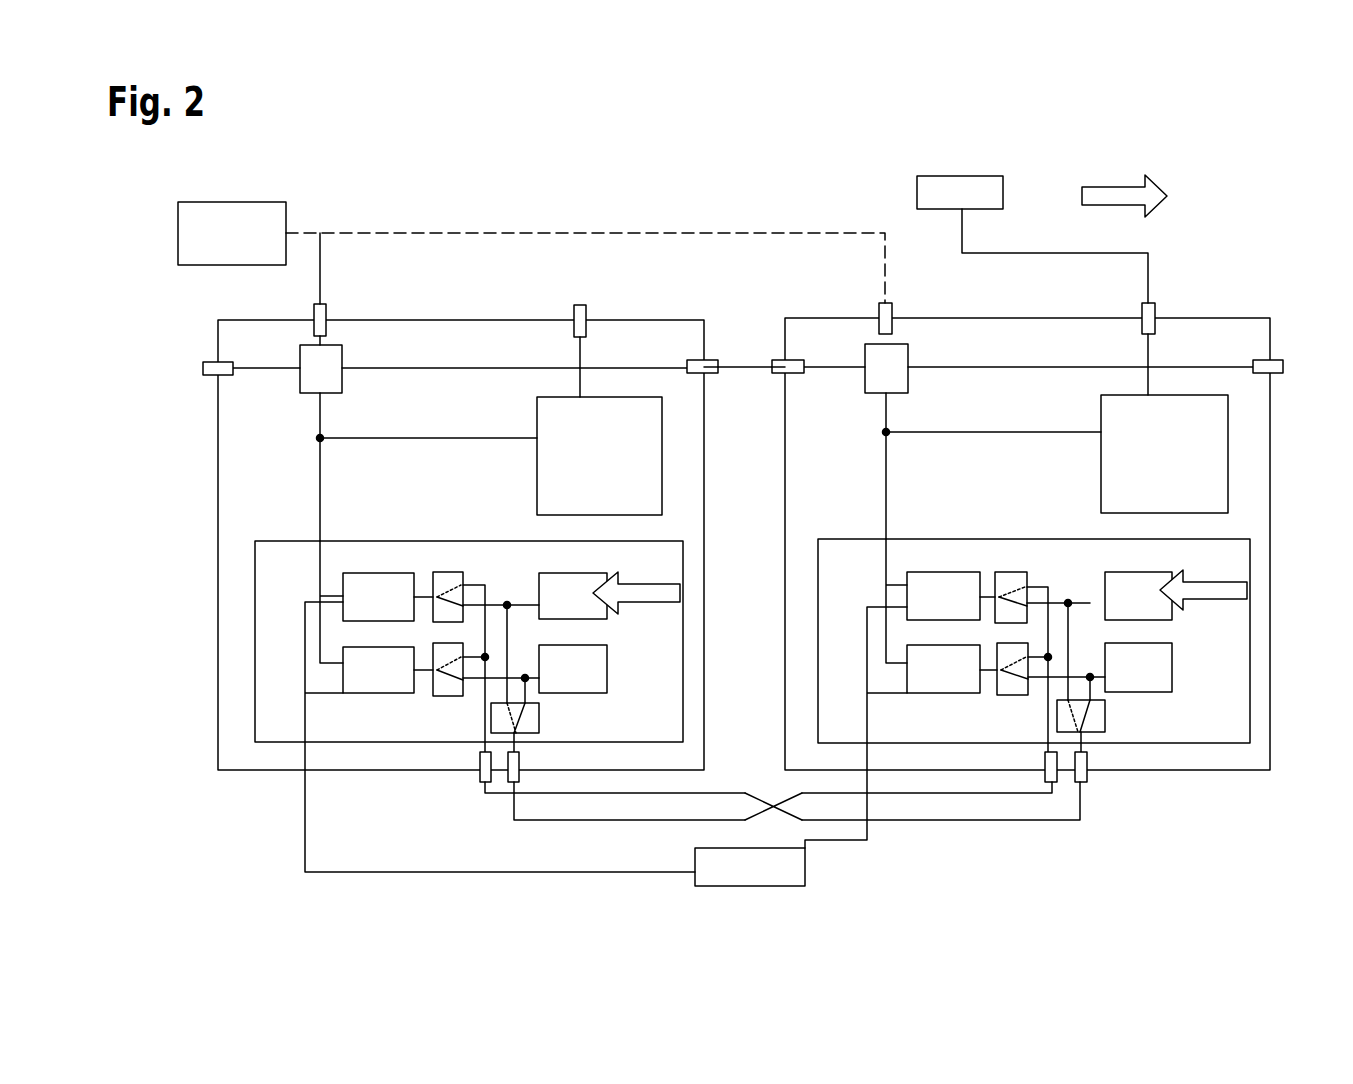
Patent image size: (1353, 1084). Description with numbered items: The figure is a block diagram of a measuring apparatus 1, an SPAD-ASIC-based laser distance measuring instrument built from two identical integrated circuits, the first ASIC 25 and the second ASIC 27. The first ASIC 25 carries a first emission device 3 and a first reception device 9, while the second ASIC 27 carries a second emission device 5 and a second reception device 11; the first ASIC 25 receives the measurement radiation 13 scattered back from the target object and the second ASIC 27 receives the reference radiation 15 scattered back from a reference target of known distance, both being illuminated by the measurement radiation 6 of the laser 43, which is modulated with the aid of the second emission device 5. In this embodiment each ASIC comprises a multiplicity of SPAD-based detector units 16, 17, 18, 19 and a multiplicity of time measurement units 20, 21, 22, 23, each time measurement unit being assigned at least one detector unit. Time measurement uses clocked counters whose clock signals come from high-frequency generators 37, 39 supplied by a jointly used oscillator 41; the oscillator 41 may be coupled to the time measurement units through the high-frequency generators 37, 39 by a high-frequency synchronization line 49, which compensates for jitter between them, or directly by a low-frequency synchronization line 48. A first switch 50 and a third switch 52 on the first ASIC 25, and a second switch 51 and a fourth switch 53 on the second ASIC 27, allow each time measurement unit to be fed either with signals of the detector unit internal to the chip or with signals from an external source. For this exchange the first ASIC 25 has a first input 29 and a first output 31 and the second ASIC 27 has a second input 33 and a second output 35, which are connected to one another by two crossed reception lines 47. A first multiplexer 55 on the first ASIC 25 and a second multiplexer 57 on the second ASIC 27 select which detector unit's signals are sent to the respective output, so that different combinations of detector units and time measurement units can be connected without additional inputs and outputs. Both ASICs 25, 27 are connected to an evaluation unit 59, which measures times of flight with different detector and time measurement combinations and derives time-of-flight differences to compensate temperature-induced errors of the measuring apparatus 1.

The measuring apparatus 1 is at (1212, 249).
The first emission device 3 is at (555, 473).
The second emission device 5 is at (1110, 462).
The measurement radiation 6 is at (1110, 192).
The first reception device 9 is at (273, 743).
The second reception device 11 is at (1210, 745).
The measurement radiation 13 is at (665, 590).
The reference radiation 15 is at (1220, 585).
The first detector unit 16 is at (603, 607).
The second detector unit 17 is at (1158, 612).
The detector unit 18 is at (597, 673).
The detector unit 19 is at (1160, 663).
The first time measurement unit 20 is at (372, 583).
The second time measurement unit 21 is at (945, 583).
The time measurement unit 22 is at (378, 680).
The time measurement unit 23 is at (932, 672).
The first ASIC 25 is at (218, 480).
The second ASIC 27 is at (790, 478).
The first input 29 is at (478, 777).
The first output 31 is at (508, 775).
The second input 33 is at (1053, 777).
The second output 35 is at (1085, 775).
The high-frequency generator 37 is at (335, 378).
The high-frequency generator 39 is at (900, 375).
The oscillator 41 is at (277, 219).
The laser 43 is at (925, 195).
The crossed reception lines 47 is at (973, 822).
The low-frequency synchronization line 48 is at (720, 233).
The high-frequency synchronization line 49 is at (737, 367).
The first switch 50 is at (447, 583).
The second switch 51 is at (1010, 578).
The third switch 52 is at (445, 687).
The fourth switch 53 is at (1010, 685).
The first multiplexer 55 is at (528, 720).
The second multiplexer 57 is at (1100, 722).
The evaluation unit 59 is at (793, 868).